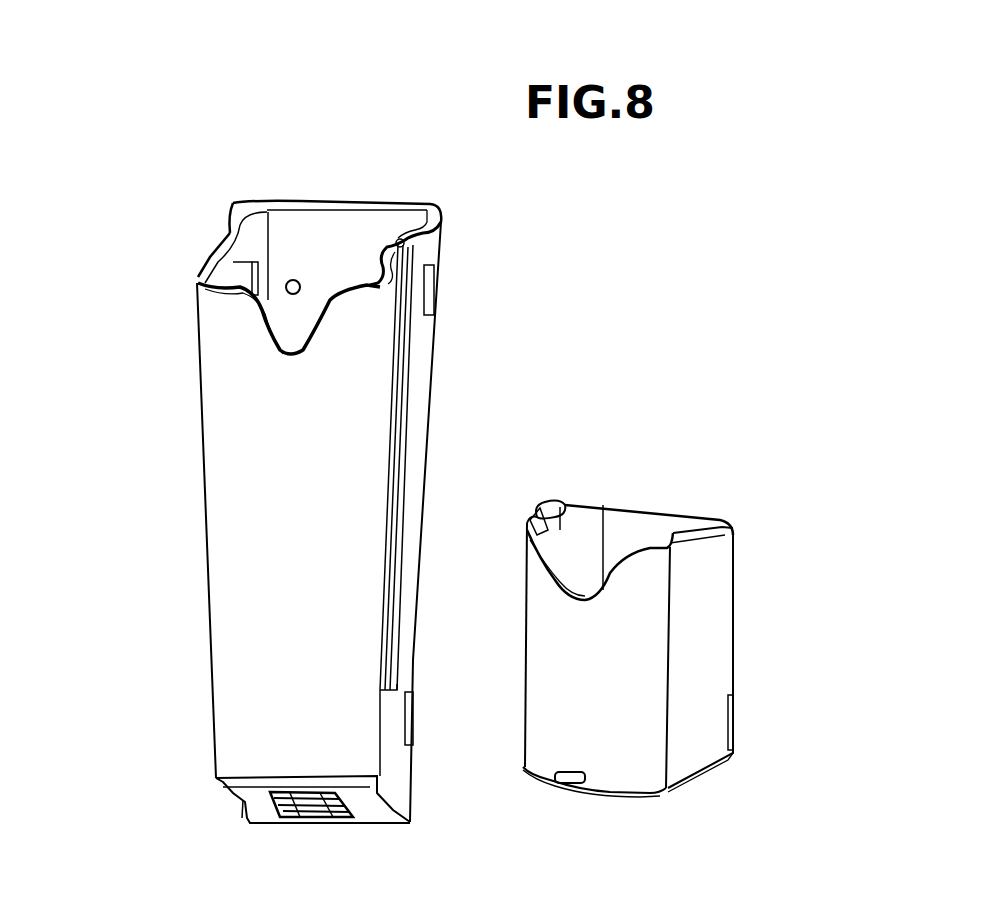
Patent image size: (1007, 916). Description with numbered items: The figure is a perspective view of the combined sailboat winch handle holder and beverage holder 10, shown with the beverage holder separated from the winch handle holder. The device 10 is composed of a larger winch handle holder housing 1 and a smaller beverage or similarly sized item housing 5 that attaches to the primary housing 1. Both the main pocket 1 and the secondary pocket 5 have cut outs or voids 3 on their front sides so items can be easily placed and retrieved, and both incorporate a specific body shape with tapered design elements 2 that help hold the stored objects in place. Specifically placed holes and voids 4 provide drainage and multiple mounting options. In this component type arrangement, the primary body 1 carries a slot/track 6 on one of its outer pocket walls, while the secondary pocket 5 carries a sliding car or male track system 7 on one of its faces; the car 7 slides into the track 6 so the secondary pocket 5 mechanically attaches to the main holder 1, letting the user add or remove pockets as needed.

The sailboat winch handle holder and beverage holder 10 is at (118, 125).
The winch handle holder housing 1 is at (257, 534).
The tapered design elements 2 is at (232, 238).
The cut outs or voids 3 is at (280, 349).
The holes and voids 4 is at (294, 280).
The beverage holder housing 5 is at (587, 697).
The slot/track 6 is at (393, 472).
The sliding car track system 7 is at (562, 503).